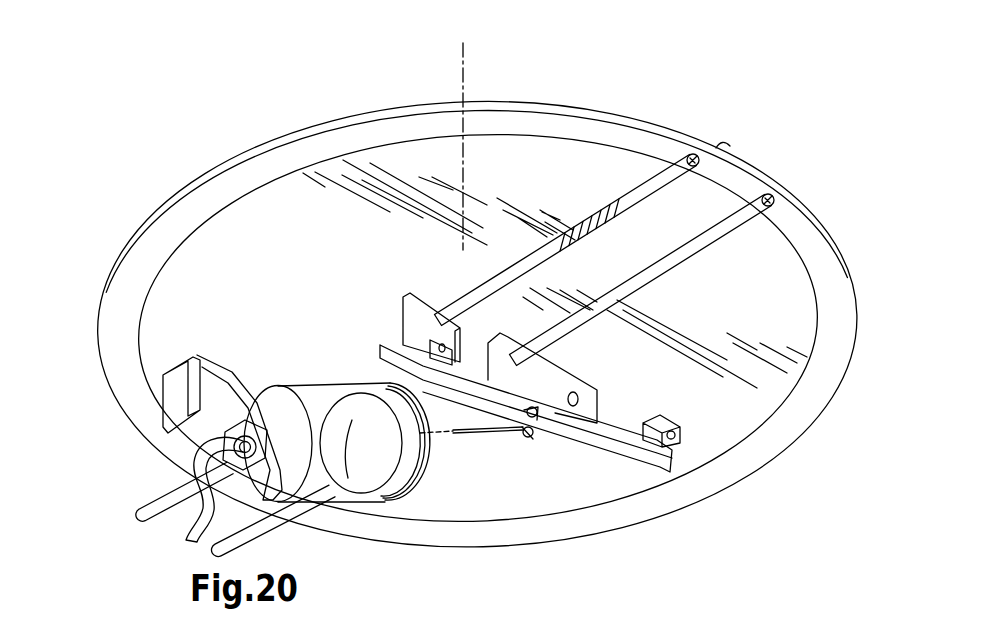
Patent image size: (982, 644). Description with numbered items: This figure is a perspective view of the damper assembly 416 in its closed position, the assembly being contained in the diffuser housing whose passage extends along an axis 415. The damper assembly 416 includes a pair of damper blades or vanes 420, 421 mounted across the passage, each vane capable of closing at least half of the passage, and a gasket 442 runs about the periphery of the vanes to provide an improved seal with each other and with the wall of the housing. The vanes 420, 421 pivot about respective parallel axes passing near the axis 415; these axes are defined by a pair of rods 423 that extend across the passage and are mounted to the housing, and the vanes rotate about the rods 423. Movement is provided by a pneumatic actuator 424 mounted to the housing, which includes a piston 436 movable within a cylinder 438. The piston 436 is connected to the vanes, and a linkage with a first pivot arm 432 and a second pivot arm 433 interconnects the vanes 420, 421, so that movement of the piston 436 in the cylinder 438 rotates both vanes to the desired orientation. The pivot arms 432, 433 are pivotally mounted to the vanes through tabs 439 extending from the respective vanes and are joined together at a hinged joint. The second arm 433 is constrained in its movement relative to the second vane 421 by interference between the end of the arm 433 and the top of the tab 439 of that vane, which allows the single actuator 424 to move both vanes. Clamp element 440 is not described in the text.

The axis 415 is at (460, 88).
The damper assembly 416 is at (425, 282).
The first vane 420 is at (752, 400).
The second vane 421 is at (247, 234).
The rods 423 is at (600, 215).
The pneumatic actuator 424 is at (353, 512).
The first pivot arm 432 is at (605, 448).
The second pivot arm 433 is at (500, 432).
The piston 436 is at (473, 433).
The cylinder 438 is at (302, 400).
The tabs 439 is at (418, 303).
The motor clamp 440 is at (222, 392).
The gasket 442 is at (158, 252).